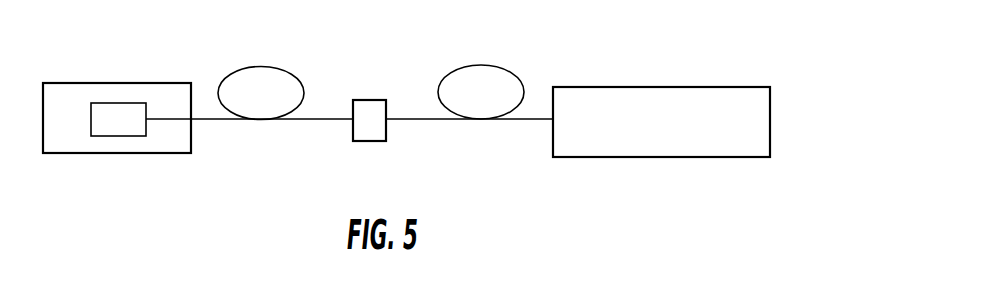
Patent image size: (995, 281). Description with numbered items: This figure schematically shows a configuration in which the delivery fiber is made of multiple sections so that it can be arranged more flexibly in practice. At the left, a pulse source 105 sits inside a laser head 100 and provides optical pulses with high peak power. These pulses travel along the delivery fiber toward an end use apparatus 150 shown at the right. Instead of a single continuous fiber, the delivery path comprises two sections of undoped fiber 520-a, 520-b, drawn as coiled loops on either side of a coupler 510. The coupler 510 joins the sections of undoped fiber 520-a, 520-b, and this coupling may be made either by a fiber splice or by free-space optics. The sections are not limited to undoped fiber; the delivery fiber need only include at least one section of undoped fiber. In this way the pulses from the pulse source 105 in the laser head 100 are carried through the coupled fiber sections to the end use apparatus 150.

The laser head 100 is at (163, 153).
The pulse source 105 is at (110, 101).
The coupler 510 is at (368, 89).
The section of undoped fiber 520-a is at (259, 54).
The section of undoped fiber 520-b is at (497, 59).
The end use apparatus 150 is at (683, 157).